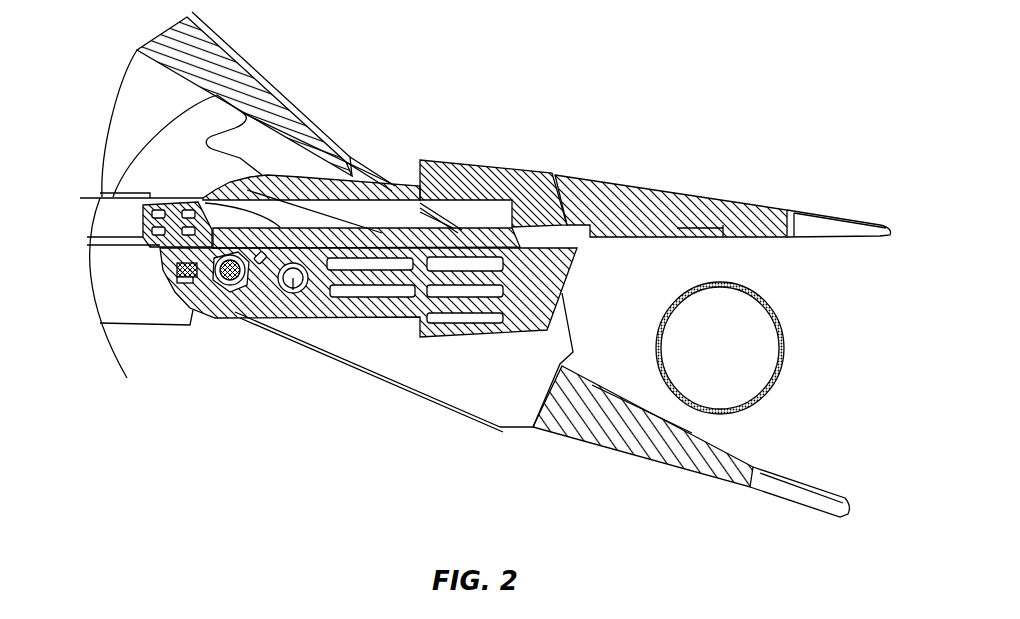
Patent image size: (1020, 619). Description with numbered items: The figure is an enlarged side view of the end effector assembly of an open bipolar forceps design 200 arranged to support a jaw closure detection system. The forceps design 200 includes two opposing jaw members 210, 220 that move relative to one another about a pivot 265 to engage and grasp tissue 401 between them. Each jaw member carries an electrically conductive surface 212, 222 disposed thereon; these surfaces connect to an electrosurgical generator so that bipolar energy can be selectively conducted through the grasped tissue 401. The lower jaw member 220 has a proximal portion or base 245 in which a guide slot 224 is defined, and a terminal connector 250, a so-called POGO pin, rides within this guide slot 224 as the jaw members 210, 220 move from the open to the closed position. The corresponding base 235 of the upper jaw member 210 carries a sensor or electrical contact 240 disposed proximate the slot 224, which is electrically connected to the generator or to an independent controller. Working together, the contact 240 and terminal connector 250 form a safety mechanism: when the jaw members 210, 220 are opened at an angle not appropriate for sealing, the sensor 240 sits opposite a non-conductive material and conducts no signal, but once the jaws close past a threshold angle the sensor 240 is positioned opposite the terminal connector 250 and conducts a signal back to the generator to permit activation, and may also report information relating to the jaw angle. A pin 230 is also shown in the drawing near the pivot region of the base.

The forceps design 200 is at (645, 62).
The jaw member 210 is at (655, 212).
The electrically conductive surface 212 is at (784, 238).
The jaw member 220 is at (691, 442).
The electrically conductive surface 222 is at (740, 444).
The guide slot 224 is at (260, 187).
The pin 230 is at (220, 323).
The base 235 is at (372, 313).
The sensor or contact 240 is at (243, 320).
The base 245 is at (455, 375).
The terminal connector 250 is at (187, 293).
The pivot 265 is at (254, 317).
The tissue 401 is at (787, 352).